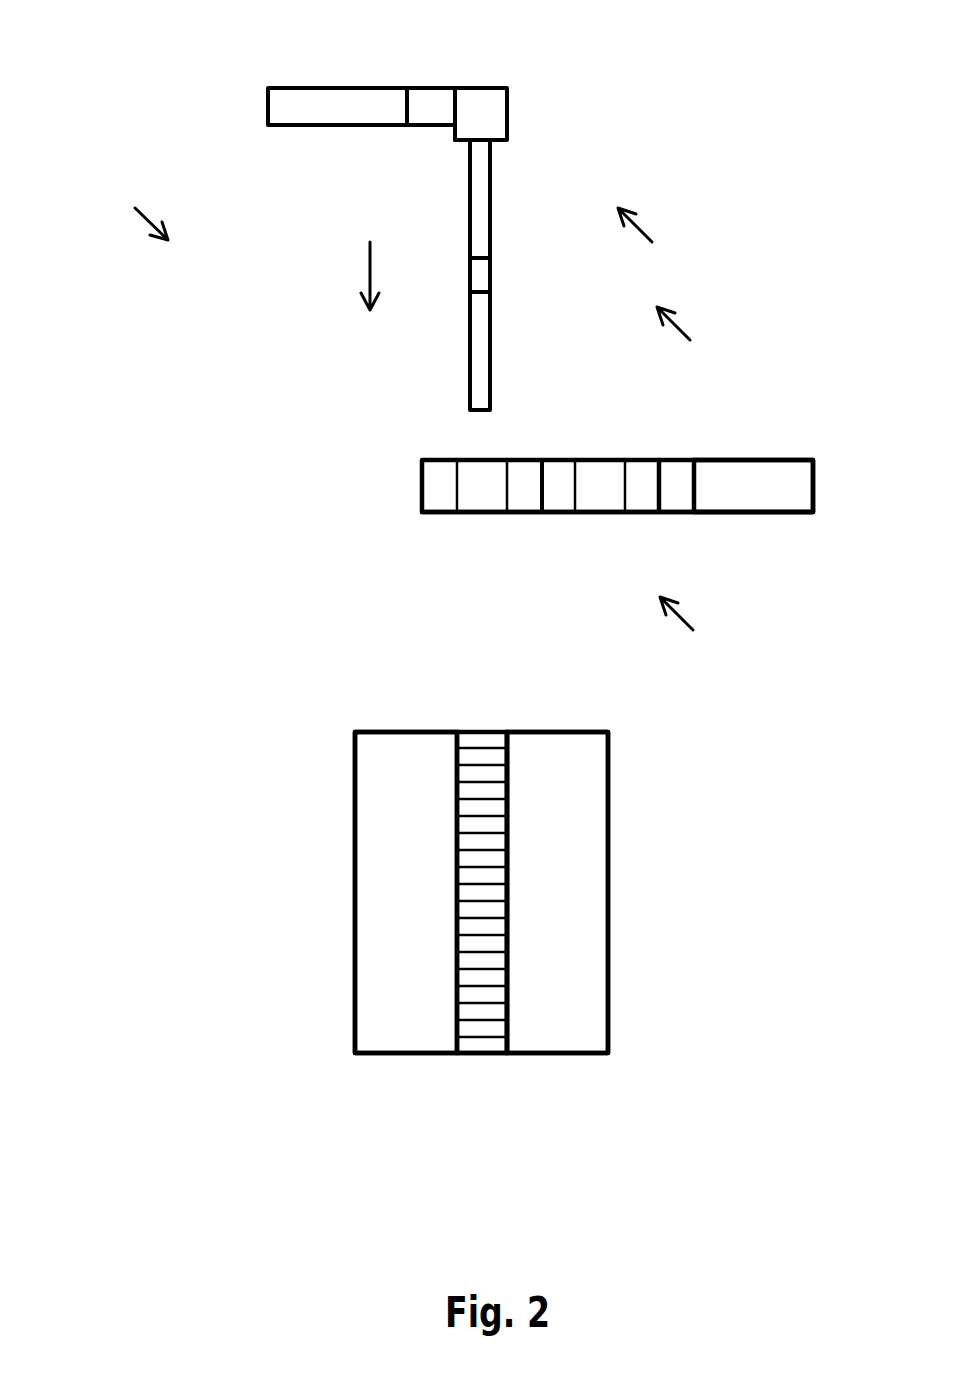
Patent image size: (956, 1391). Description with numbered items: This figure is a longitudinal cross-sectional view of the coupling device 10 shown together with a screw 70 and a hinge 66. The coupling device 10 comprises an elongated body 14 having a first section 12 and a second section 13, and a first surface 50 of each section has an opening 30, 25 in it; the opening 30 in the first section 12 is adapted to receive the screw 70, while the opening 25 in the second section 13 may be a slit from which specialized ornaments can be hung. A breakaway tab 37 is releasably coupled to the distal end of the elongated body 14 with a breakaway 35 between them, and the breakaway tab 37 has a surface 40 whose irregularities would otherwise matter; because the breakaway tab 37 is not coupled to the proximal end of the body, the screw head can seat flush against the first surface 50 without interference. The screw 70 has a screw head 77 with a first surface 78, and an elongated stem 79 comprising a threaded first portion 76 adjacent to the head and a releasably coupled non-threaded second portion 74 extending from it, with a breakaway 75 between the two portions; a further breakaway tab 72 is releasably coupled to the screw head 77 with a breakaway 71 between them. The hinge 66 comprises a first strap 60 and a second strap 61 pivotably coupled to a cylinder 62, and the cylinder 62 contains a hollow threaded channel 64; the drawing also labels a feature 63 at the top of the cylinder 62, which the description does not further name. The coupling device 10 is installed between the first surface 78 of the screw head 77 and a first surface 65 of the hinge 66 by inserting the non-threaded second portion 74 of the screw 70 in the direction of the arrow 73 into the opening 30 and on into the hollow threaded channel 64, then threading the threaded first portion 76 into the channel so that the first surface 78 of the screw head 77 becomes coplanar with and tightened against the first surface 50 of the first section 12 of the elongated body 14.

The coupling device 10 is at (120, 199).
The first section 12 is at (374, 526).
The second section 13 is at (708, 640).
The elongated body 14 is at (753, 416).
The opening 25 is at (592, 498).
The opening 30 is at (472, 498).
The breakaway 35 is at (667, 498).
The breakaway tab 37 is at (757, 498).
The surface 40 is at (698, 460).
The first surface 50 is at (437, 460).
The first strap 60 is at (575, 897).
The second strap 61 is at (425, 897).
The cylinder 62 is at (507, 1080).
The channel 63 is at (472, 728).
The hollow threaded channel 64 is at (492, 905).
The first surface of the hinge 65 is at (523, 730).
The hinge 66 is at (302, 827).
The screw 70 is at (697, 342).
The breakaway 71 is at (437, 107).
The breakaway tab 72 is at (373, 107).
The arrow 73 is at (367, 275).
The non-threaded second portion 74 is at (490, 348).
The breakaway 75 is at (490, 277).
The threaded first portion 76 is at (490, 195).
The screw head 77 is at (490, 105).
The first surface of the screw head 78 is at (457, 138).
The elongated stem 79 is at (655, 250).